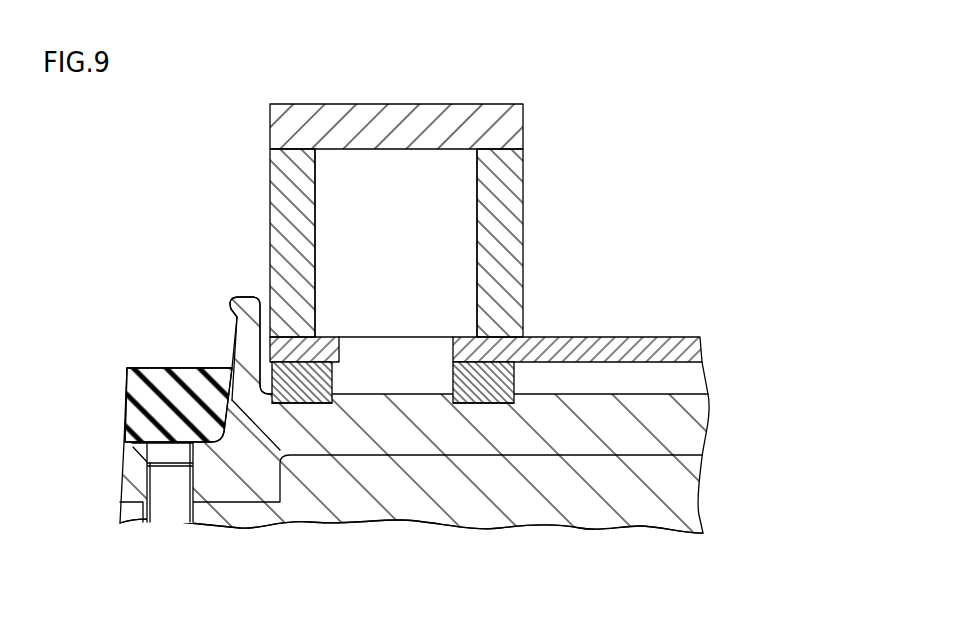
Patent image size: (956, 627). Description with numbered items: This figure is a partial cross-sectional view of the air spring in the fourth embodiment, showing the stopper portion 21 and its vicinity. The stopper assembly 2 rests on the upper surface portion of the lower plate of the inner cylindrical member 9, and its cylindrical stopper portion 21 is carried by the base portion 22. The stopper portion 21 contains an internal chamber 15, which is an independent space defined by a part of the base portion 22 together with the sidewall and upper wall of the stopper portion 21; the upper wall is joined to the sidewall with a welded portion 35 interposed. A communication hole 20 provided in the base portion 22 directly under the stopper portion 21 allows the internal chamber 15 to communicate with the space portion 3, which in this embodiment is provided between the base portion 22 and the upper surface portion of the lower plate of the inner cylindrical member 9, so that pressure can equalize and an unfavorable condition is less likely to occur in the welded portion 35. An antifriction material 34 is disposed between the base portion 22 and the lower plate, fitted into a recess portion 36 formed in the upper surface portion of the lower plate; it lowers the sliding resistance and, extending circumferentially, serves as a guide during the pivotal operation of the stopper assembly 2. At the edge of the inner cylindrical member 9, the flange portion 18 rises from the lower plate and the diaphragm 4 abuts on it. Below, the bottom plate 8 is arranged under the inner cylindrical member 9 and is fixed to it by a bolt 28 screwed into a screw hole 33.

The stopper assembly 2 is at (489, 271).
The space portion 3 is at (580, 392).
The diaphragm 4 is at (152, 397).
The bottom plate 8 is at (562, 505).
The inner cylindrical member 9 is at (383, 430).
The internal chamber 15 is at (330, 210).
The flange portion 18 is at (252, 324).
The communication hole 20 is at (340, 348).
The stopper portion 21 is at (507, 240).
The base portion 22 is at (489, 344).
The bolt 28 is at (176, 505).
The screw hole 33 is at (160, 453).
The antifriction material 34 is at (297, 388).
The welded portion 35 is at (497, 149).
The recess portion 36 is at (331, 393).